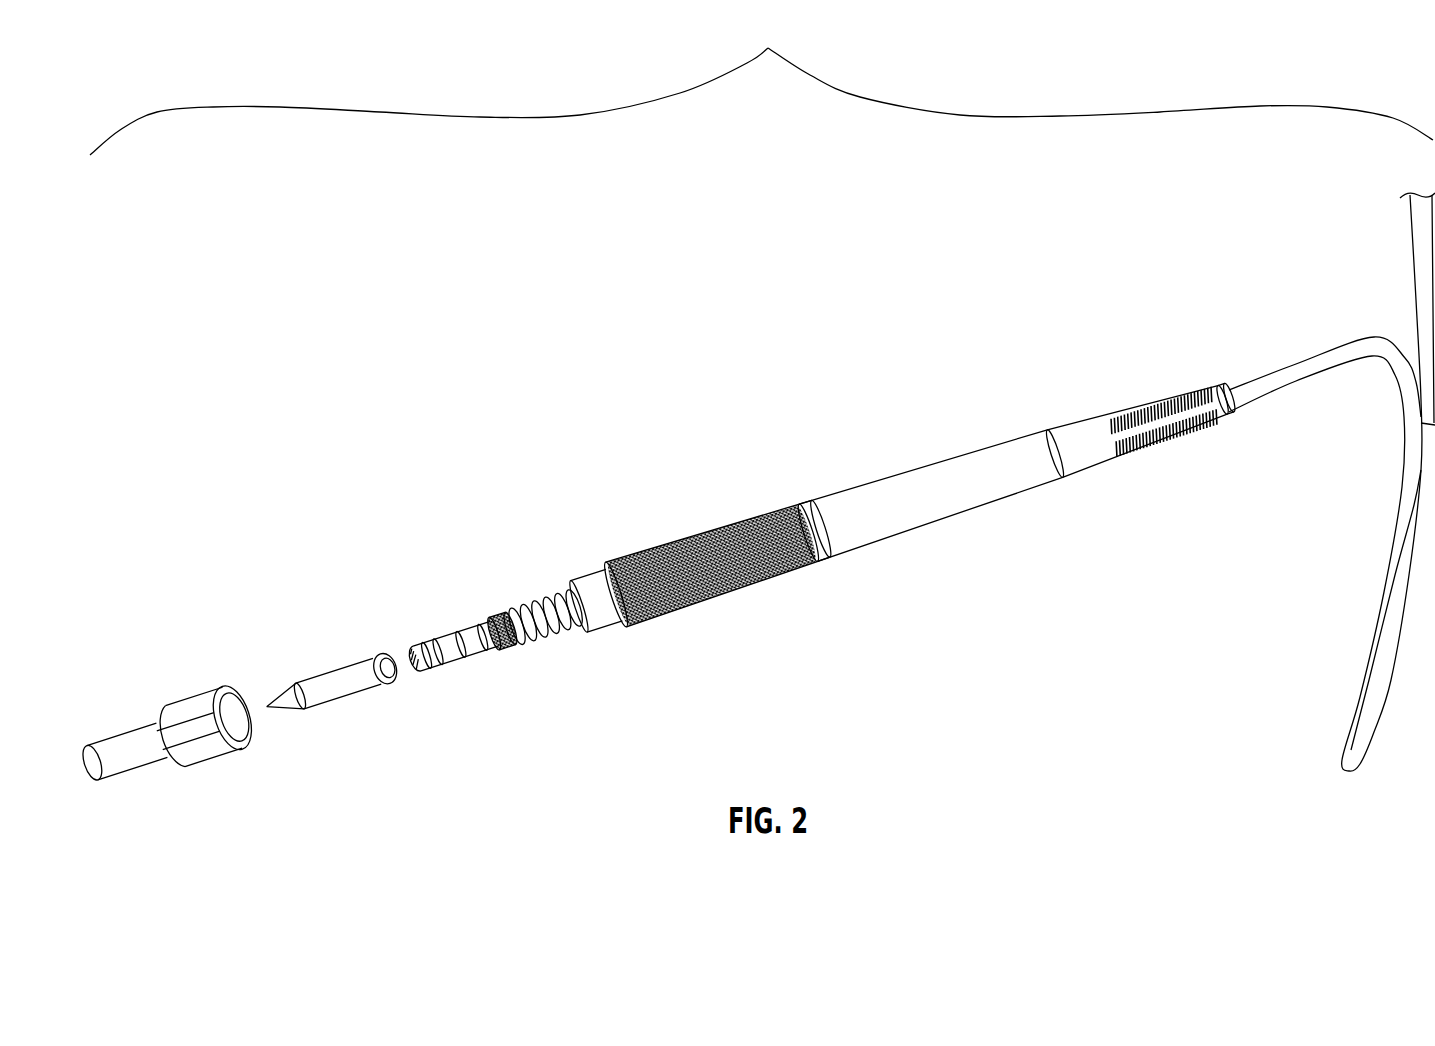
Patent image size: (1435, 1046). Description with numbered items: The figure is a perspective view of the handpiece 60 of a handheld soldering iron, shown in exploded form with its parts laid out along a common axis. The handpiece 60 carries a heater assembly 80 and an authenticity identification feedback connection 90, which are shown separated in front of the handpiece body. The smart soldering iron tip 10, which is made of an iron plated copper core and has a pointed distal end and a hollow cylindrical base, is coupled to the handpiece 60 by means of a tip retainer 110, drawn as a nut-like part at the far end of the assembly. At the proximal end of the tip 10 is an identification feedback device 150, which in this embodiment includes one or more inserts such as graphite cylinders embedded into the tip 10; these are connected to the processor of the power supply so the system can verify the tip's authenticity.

The smart soldering iron tip 10 is at (318, 660).
The handpiece 60 is at (866, 397).
The heater assembly 80 is at (460, 667).
The authenticity identification feedback connection 90 is at (498, 605).
The tip retainer 110 is at (180, 780).
The identification feedback device 150 is at (395, 688).